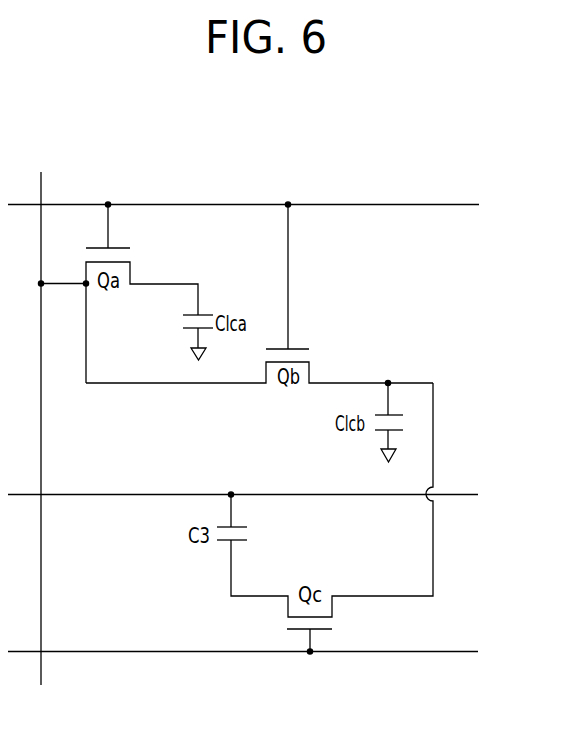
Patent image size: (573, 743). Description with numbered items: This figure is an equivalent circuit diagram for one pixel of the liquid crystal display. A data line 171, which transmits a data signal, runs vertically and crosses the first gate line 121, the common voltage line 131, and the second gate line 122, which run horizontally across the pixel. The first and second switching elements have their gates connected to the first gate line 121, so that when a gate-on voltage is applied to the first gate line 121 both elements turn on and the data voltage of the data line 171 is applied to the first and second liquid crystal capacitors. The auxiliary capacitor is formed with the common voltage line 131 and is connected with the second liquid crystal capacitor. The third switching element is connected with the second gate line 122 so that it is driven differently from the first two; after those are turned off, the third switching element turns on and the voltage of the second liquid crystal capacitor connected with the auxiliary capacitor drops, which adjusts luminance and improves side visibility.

The data line 171 is at (42, 414).
The first gate line 121 is at (265, 205).
The common voltage line 131 is at (265, 495).
The second gate line 122 is at (265, 652).